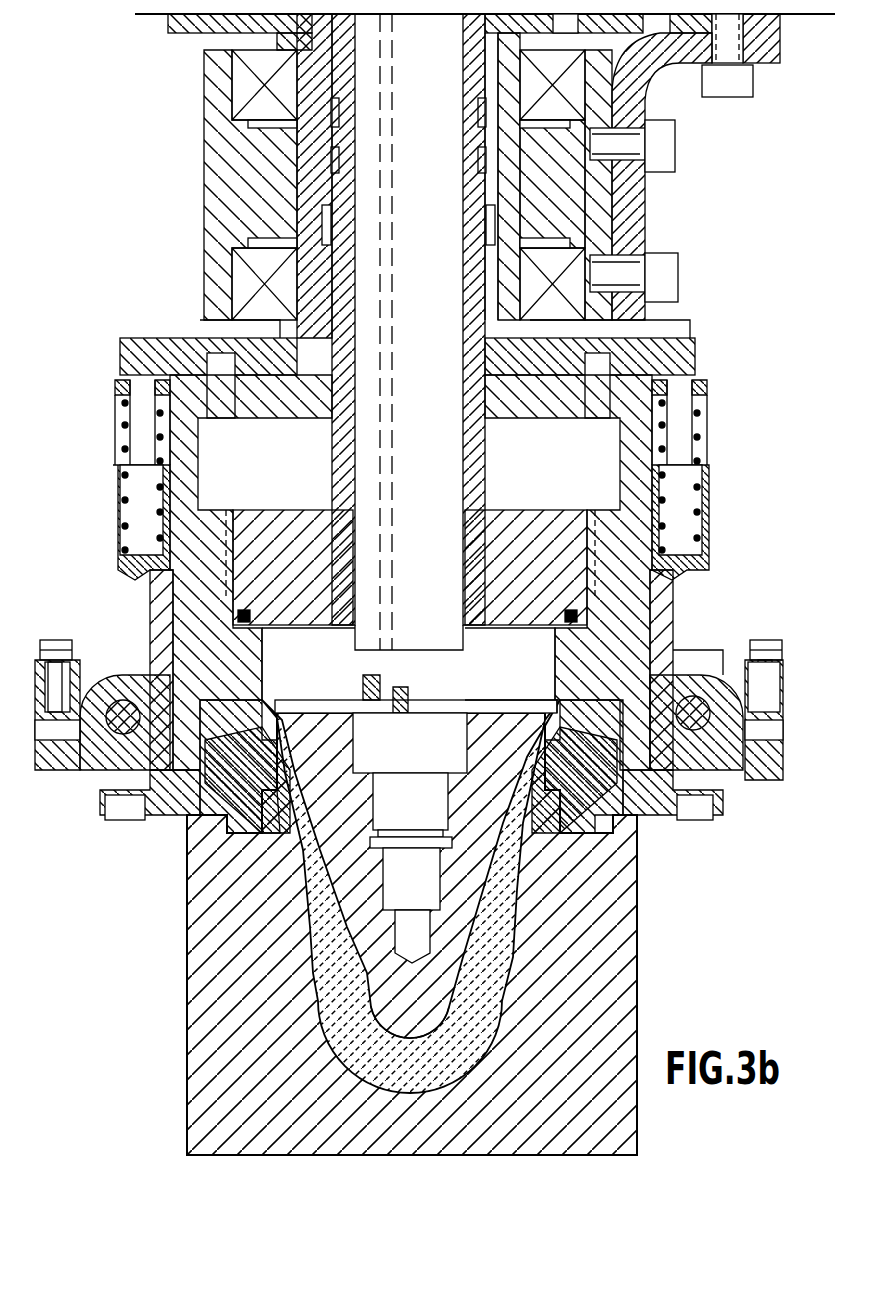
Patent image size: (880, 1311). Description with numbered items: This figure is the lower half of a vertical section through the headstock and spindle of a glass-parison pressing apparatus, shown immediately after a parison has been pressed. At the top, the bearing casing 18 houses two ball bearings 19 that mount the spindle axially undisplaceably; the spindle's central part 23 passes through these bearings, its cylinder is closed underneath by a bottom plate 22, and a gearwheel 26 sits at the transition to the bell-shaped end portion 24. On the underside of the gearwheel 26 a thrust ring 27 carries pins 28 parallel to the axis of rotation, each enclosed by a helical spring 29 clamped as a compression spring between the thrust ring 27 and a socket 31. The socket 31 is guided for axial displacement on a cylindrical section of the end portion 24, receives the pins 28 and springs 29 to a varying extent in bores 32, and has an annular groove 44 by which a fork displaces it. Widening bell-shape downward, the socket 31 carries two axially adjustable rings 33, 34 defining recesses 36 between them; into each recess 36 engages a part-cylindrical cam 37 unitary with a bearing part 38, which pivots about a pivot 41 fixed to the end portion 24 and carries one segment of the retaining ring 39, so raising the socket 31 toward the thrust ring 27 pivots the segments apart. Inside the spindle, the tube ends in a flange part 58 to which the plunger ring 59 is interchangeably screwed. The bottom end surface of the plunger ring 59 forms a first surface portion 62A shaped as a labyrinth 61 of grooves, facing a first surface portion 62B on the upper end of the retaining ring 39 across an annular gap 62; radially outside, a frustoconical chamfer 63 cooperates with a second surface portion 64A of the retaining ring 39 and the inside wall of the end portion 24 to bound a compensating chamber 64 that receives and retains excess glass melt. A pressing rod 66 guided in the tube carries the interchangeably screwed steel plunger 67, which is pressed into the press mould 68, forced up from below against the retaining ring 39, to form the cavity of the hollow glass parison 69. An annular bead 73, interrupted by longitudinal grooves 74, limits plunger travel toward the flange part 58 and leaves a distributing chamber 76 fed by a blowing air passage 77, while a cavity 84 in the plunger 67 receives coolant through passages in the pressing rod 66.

The bearing casing 18 is at (212, 184).
The ball bearings 19 is at (240, 92).
The bottom plate 22 is at (178, 22).
The central part 23 is at (322, 150).
The bell-shaped end portion 24 is at (185, 582).
The gearwheel 26 is at (150, 330).
The thrust ring 27 is at (117, 388).
The pins 28 is at (140, 440).
The helical springs 29 is at (123, 426).
The socket 31 is at (668, 583).
The bores 32 is at (692, 508).
The ring 33 is at (775, 700).
The ring 34 is at (728, 778).
The recesses 36 is at (783, 755).
The part-cylindrical cam 37 is at (52, 775).
The bearing part 38 is at (96, 775).
The retaining ring 39 is at (202, 843).
The pivot 41 is at (113, 700).
The annular groove 44 is at (672, 617).
The flange part 58 is at (292, 527).
The plunger ring 59 is at (258, 642).
The labyrinth 61 is at (637, 817).
The annular gap 62 is at (188, 882).
The first surface portion 62A is at (252, 757).
The first surface portion 62B is at (280, 830).
The frustoconical chamfer 63 is at (242, 703).
The compensating chamber 64 is at (180, 822).
The second surface portion 64A is at (185, 845).
The pressing rod 66 is at (408, 332).
The plunger 67 is at (440, 978).
The press mould 68 is at (598, 1128).
The hollow glass parison 69 is at (512, 912).
The annular bead 73 is at (500, 700).
The longitudinal grooves 74 is at (283, 701).
The distributing chamber 76 is at (510, 663).
The blowing air passage 77 is at (395, 476).
The cavity 84 is at (411, 905).